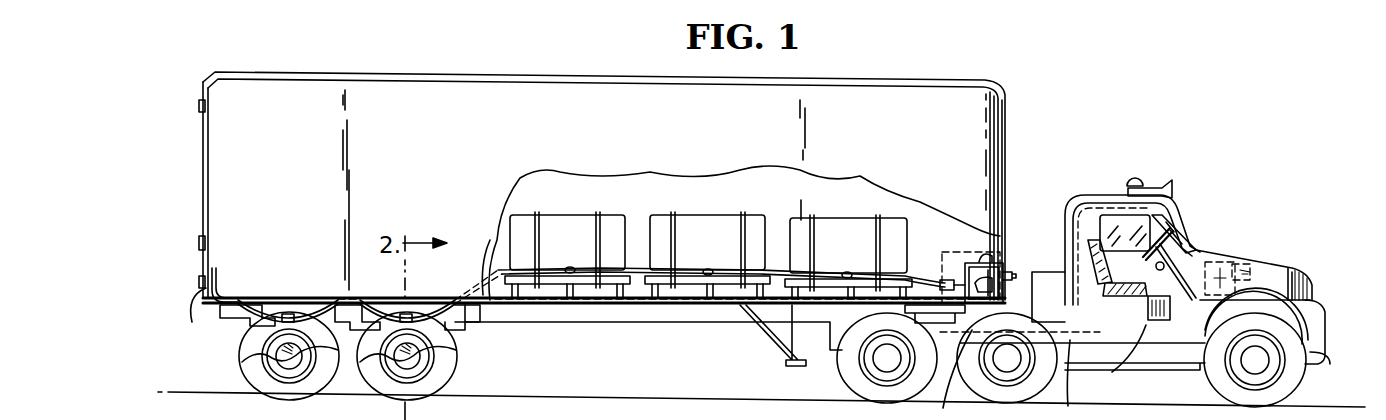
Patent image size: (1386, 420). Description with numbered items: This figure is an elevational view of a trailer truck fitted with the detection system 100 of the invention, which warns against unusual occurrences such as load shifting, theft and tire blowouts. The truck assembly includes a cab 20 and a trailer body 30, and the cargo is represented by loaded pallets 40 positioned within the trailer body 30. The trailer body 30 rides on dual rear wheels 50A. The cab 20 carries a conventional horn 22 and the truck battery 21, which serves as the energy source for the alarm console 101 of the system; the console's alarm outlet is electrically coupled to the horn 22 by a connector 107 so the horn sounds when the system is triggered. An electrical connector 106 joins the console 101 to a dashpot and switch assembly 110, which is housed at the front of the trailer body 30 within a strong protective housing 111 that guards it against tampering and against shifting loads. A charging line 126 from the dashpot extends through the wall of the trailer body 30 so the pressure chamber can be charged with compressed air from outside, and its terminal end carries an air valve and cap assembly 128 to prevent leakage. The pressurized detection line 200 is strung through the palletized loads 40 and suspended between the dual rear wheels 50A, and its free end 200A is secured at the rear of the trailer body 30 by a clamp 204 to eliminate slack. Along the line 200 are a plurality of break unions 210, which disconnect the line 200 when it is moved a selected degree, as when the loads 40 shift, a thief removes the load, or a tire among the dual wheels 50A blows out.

The trailer body 30 is at (962, 82).
The detection system 100 is at (919, 223).
The loaded pallets 40 is at (555, 215).
The break unions 210 is at (288, 313).
The detection line 200 is at (500, 268).
The free end 200A is at (208, 266).
The clamp 204 is at (185, 319).
The dual wheels 50A is at (262, 373).
The protective housing 111 is at (990, 258).
The charging line 126 is at (1001, 265).
The air valve and cap assembly 128 is at (1013, 270).
The connector 107 is at (1095, 200).
The horn 22 is at (1164, 184).
The cab 20 is at (1083, 282).
The truck battery 21 is at (1228, 262).
The alarm console 101 is at (1111, 359).
The dashpot and switch assembly 110 is at (947, 375).
The electrical connector 106 is at (1075, 380).